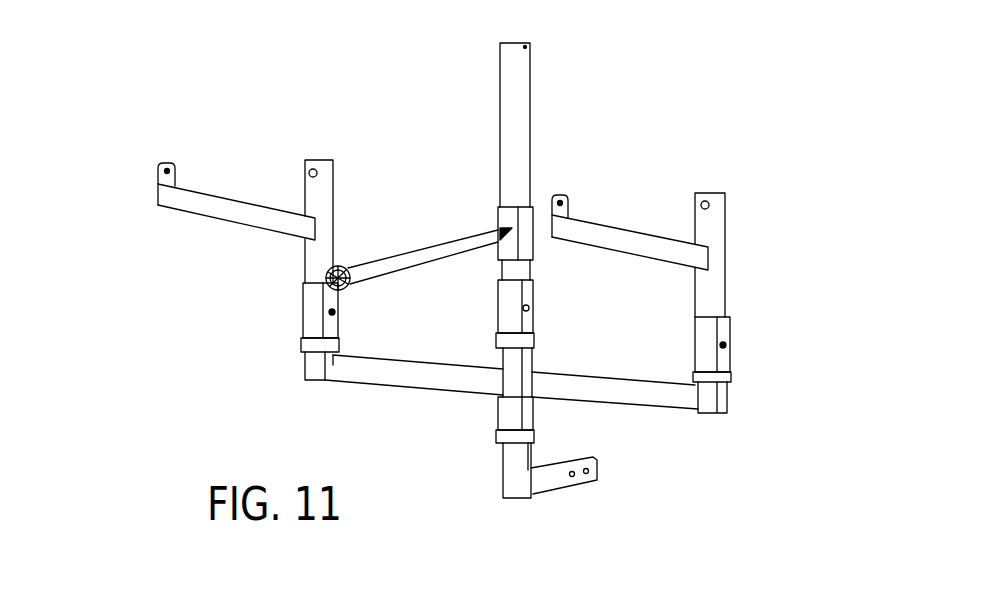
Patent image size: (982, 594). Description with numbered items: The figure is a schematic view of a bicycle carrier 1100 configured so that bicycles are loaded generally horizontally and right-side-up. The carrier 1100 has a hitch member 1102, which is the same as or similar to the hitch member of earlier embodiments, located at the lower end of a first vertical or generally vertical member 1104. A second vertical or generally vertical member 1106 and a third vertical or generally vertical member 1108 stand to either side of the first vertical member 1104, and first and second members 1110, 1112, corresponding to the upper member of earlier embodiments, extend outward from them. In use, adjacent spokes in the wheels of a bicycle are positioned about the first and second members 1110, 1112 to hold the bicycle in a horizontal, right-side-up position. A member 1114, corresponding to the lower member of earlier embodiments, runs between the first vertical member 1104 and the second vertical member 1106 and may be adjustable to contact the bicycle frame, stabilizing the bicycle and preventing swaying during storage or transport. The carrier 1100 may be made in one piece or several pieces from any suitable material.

The bicycle carrier 1100 is at (127, 57).
The hitch member 1102 is at (550, 487).
The first vertical member 1104 is at (515, 127).
The second vertical member 1106 is at (327, 178).
The third vertical member 1108 is at (720, 232).
The first member 1110 is at (205, 190).
The second member 1112 is at (588, 223).
The member 1114 is at (378, 258).